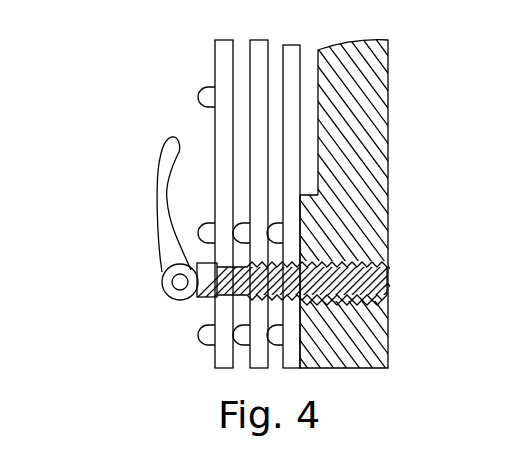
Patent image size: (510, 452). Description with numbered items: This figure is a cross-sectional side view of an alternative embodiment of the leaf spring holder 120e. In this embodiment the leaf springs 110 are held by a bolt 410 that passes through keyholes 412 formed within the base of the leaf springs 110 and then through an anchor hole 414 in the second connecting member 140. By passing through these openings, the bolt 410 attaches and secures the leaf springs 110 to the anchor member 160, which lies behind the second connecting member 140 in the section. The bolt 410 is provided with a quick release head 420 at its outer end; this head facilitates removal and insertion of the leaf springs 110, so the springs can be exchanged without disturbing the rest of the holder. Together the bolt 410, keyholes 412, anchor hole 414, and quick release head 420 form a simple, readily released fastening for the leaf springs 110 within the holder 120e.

The leaf spring holder 120e is at (86, 52).
The leaf springs 110 is at (258, 58).
The second connecting member 140 is at (297, 113).
The anchor member 160 is at (372, 233).
The bolt 410 is at (367, 280).
The keyholes 412 is at (197, 316).
The anchor hole 414 is at (300, 297).
The quick release head 420 is at (160, 282).